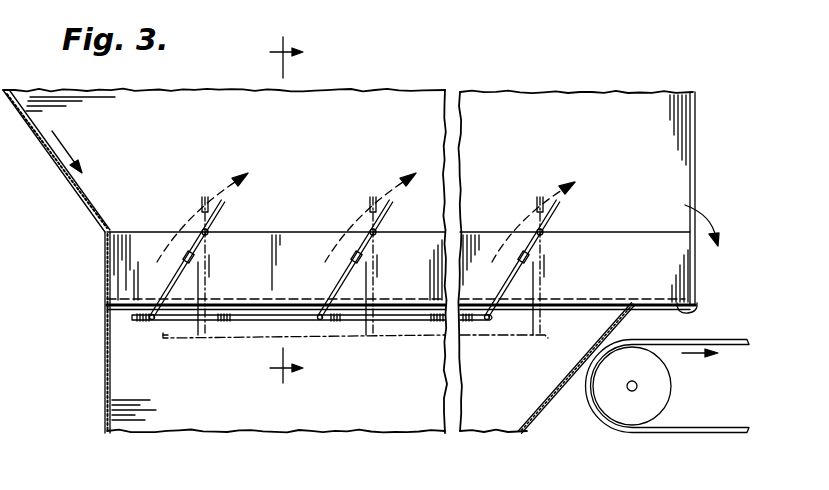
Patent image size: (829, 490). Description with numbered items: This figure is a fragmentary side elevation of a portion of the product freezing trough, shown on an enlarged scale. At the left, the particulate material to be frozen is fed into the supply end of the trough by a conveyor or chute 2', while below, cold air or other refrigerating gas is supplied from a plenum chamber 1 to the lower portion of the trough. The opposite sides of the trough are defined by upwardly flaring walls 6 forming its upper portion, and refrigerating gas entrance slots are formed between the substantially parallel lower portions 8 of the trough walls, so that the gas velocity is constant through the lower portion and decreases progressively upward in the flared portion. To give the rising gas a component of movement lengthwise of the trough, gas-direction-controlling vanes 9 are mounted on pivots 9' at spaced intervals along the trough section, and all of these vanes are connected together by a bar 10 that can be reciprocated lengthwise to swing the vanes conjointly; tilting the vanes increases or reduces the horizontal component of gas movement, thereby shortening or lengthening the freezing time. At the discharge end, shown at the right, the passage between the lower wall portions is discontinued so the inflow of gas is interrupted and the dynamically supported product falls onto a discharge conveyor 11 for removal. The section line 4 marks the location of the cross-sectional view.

The plenum chamber 1 is at (698, 308).
The conveyor or chute 2' is at (56, 161).
The section line 4- 4 is at (280, 215).
The upwardly flaring walls 6 is at (377, 100).
The lower portions of the trough walls 8 is at (291, 253).
The gas-direction-controlling vanes 9 is at (369, 254).
The pivots 9' is at (391, 244).
The bar 10 is at (140, 324).
The discharge conveyor 11 is at (733, 339).